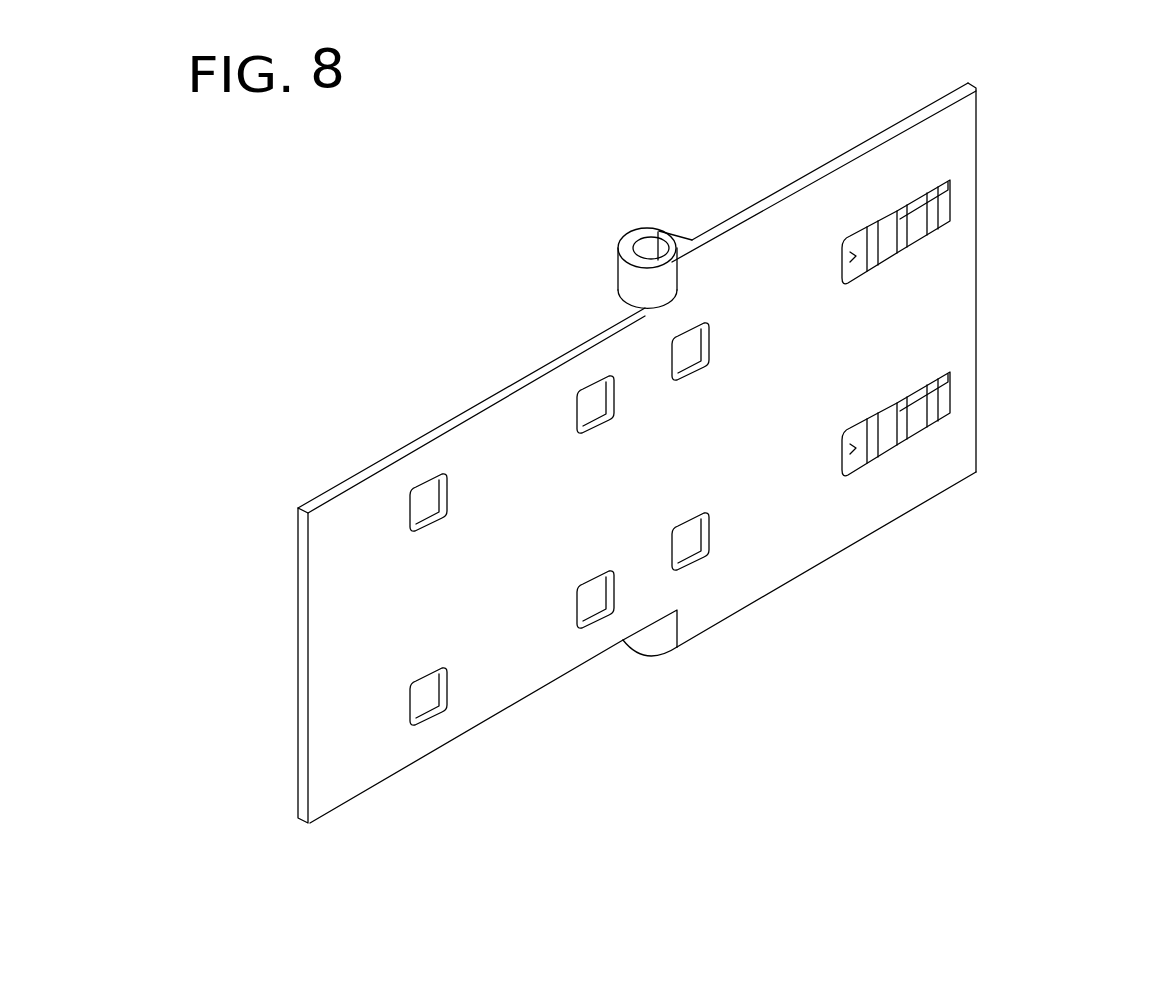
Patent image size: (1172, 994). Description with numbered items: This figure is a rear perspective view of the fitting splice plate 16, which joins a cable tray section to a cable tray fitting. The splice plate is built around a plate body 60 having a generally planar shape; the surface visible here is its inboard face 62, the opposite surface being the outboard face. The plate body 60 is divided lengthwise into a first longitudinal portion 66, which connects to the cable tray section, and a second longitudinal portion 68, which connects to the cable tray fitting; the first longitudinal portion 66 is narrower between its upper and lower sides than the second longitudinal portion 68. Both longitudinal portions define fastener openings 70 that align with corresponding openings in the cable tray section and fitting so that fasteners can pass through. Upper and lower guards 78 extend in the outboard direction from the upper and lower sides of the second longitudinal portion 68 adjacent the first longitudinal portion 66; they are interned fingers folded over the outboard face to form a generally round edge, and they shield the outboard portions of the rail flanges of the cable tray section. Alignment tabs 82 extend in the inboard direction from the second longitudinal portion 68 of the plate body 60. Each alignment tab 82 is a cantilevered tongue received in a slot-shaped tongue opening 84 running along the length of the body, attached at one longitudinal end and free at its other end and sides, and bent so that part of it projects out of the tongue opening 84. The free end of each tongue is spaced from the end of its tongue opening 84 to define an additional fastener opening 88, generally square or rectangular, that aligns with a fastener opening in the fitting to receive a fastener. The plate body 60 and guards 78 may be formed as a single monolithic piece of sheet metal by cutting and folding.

The fitting splice plate 16 is at (448, 210).
The plate body 60 is at (651, 453).
The inboard face 62 is at (656, 497).
The first longitudinal portion 66 is at (472, 714).
The second longitudinal portion 68 is at (922, 487).
The fastener openings 70 is at (690, 348).
The upper and lower guards 78 is at (622, 252).
The alignment tabs 82 is at (947, 266).
The tongue opening 84 is at (888, 227).
The additional fastener opening 88 is at (852, 252).